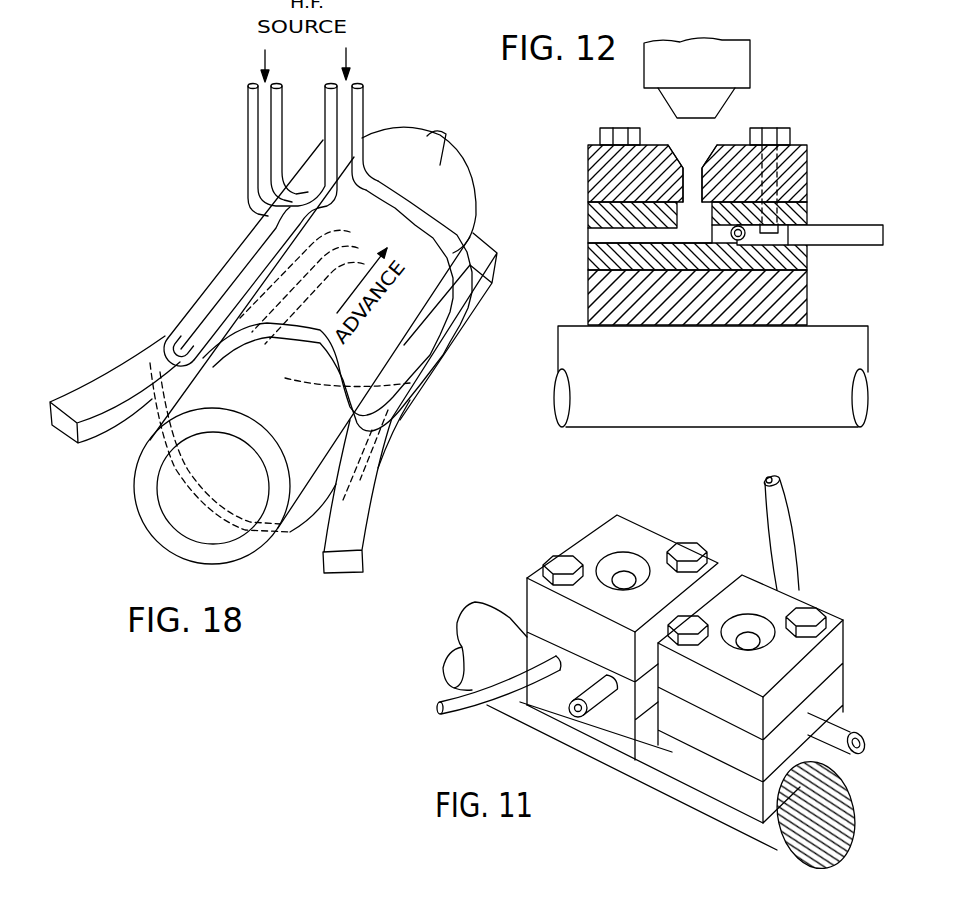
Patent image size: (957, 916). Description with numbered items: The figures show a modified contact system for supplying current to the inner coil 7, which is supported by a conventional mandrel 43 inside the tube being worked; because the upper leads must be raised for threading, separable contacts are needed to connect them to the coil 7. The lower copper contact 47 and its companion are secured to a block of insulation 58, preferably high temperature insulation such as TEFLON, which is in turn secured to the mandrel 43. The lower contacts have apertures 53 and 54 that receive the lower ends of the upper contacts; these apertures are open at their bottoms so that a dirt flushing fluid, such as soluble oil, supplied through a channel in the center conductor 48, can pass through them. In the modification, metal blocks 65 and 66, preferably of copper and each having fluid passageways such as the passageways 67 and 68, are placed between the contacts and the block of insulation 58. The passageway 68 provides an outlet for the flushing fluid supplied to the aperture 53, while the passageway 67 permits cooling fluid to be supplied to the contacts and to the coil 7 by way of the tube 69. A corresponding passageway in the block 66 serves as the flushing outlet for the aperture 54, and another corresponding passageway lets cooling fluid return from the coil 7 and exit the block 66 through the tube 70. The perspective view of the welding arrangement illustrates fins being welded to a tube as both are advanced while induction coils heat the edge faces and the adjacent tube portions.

In FIG. 11, the coil 7 is at (472, 703).
In FIG. 11, the mandrel 43 is at (668, 793).
In FIG. 12, the contact 47 is at (798, 181).
In FIG. 12, the center conductor 48 is at (742, 67).
In FIG. 12, the aperture 53 is at (703, 152).
In FIG. 11, the aperture 53 is at (763, 623).
In FIG. 11, the aperture 54 is at (628, 560).
In FIG. 11, the block of insulation 58 is at (725, 793).
In FIG. 12, the metal block 65 is at (593, 258).
In FIG. 11, the metal block 65 is at (835, 697).
In FIG. 11, the metal block 66 is at (532, 643).
In FIG. 12, the passageway 67 is at (783, 241).
In FIG. 12, the passageway 68 is at (593, 235).
In FIG. 12, the tube 69 is at (846, 225).
In FIG. 11, the tube 70 is at (590, 706).